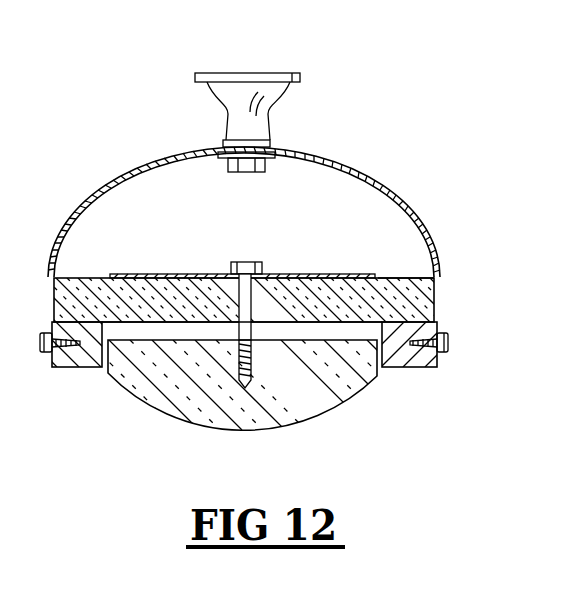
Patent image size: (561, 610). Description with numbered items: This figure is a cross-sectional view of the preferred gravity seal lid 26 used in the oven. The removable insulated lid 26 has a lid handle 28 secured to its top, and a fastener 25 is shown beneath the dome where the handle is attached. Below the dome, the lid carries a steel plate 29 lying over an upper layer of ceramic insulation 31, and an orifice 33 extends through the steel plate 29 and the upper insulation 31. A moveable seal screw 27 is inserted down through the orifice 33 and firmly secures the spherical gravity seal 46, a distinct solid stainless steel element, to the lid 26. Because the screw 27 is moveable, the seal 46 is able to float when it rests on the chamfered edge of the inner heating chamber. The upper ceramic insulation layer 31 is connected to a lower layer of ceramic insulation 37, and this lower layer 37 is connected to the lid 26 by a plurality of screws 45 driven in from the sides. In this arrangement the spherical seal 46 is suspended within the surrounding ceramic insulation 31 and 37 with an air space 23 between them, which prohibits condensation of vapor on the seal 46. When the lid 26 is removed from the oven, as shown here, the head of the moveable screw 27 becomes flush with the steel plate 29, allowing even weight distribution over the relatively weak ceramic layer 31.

The air space 23 is at (347, 331).
The nut 25 is at (250, 172).
The gravity seal lid 26 is at (112, 184).
The seal screw 27 is at (245, 262).
The lid handle 28 is at (243, 50).
The steel plate 29 is at (310, 278).
The upper layer of ceramic insulation 31 is at (392, 278).
The orifice 33 is at (232, 275).
The lower layer of ceramic insulation 37 is at (414, 367).
The screws 45 is at (447, 344).
The spherical gravity seal 46 is at (243, 432).